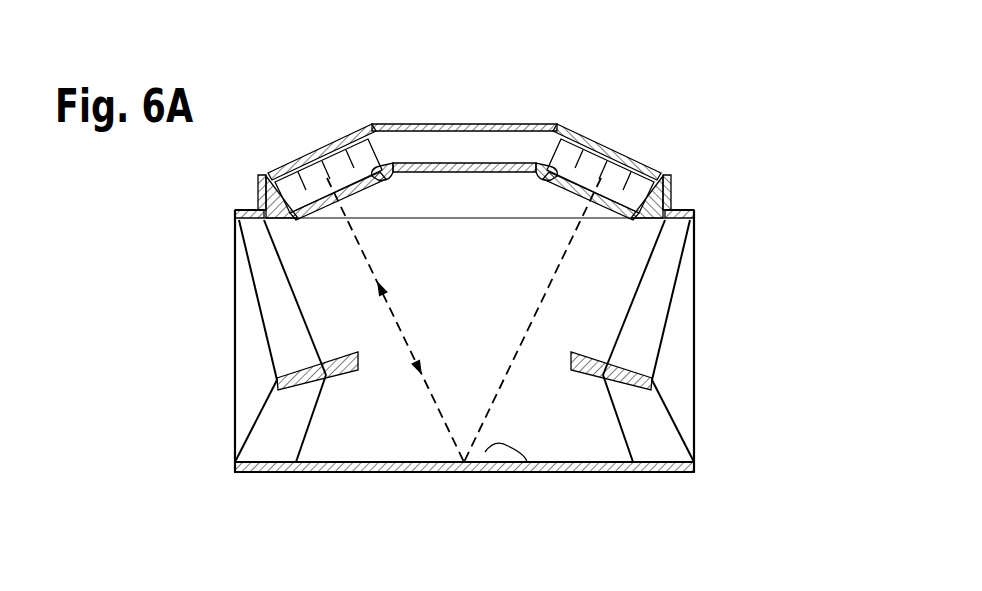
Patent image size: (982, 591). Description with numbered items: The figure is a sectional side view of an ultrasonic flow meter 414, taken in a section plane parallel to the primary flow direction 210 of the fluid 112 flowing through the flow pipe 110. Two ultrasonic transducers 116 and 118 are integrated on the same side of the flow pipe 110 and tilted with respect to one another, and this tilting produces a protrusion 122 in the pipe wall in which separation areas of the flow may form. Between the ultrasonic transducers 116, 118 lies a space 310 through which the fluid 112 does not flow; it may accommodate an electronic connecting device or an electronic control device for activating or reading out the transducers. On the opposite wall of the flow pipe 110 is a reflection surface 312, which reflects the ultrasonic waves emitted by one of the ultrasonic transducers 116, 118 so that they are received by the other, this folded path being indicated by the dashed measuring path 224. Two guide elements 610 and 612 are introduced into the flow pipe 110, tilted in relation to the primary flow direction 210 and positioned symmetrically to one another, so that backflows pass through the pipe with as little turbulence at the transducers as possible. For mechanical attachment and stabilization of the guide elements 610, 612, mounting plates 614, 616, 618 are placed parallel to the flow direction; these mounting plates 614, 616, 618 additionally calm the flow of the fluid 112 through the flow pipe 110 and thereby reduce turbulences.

The flow pipe 110 is at (635, 470).
The fluid 112 is at (245, 332).
The ultrasonic transducer 116 is at (318, 178).
The ultrasonic transducer 118 is at (612, 178).
The protrusion 122 is at (515, 187).
The primary flow direction 210 is at (673, 355).
The ultrasonic measuring path 224 is at (471, 424).
The space 310 is at (412, 150).
The reflection surface 312 is at (527, 463).
The ultrasonic flow meter 414 is at (486, 104).
The guide element 610 is at (277, 378).
The guide element 612 is at (653, 375).
The mounting plate 614 is at (267, 258).
The mounting plate 616 is at (273, 428).
The mounting plate 618 is at (652, 428).